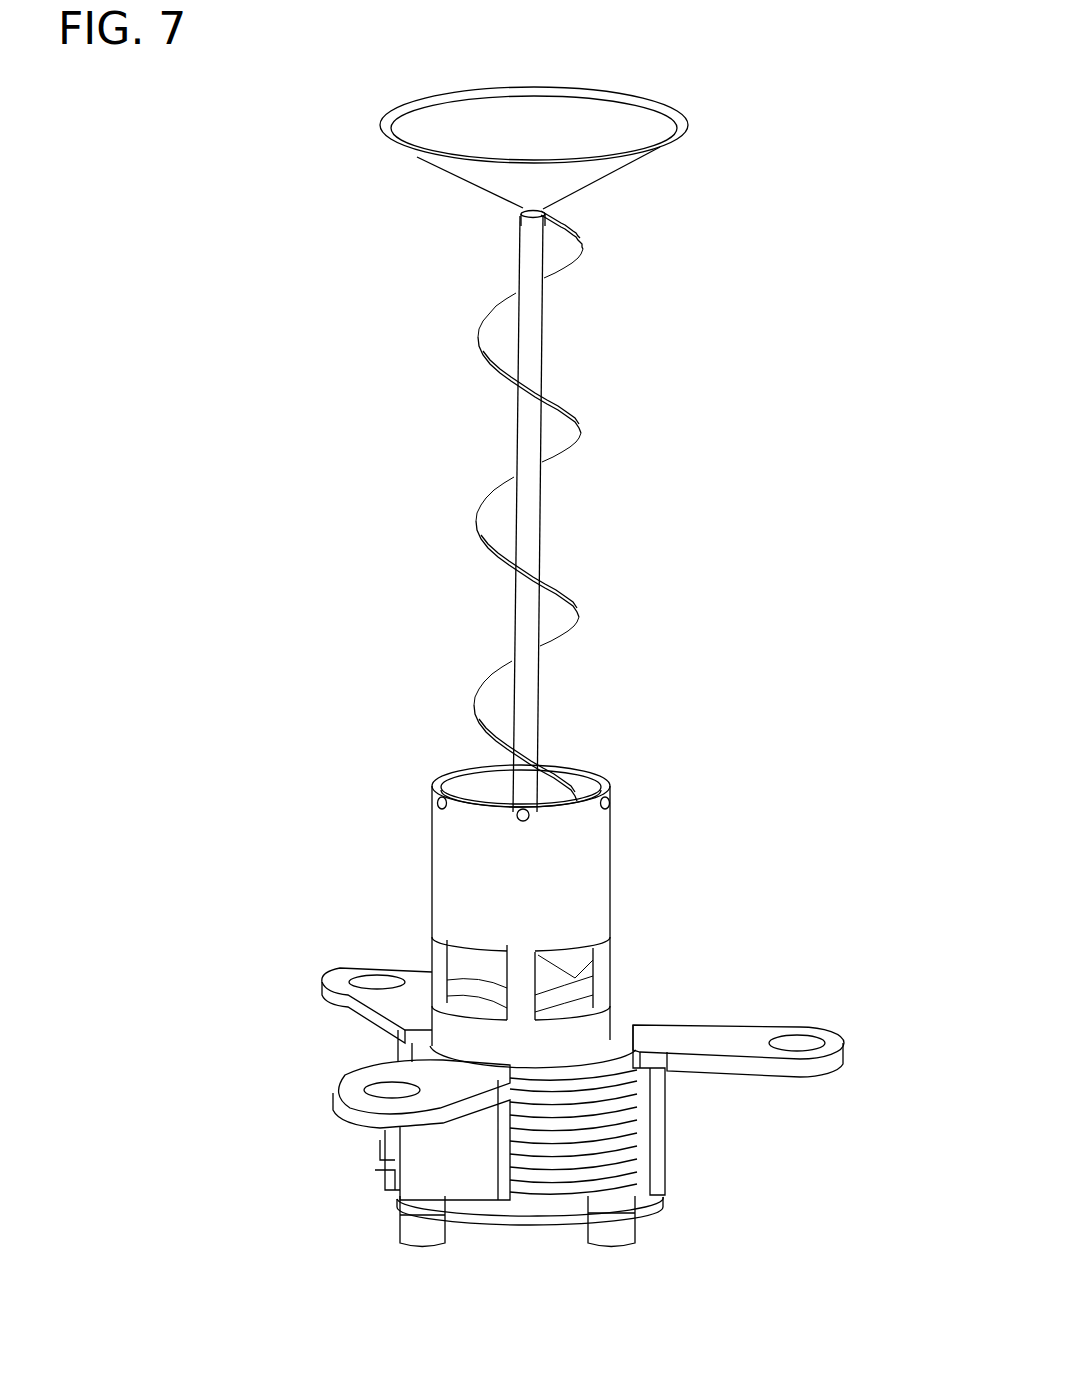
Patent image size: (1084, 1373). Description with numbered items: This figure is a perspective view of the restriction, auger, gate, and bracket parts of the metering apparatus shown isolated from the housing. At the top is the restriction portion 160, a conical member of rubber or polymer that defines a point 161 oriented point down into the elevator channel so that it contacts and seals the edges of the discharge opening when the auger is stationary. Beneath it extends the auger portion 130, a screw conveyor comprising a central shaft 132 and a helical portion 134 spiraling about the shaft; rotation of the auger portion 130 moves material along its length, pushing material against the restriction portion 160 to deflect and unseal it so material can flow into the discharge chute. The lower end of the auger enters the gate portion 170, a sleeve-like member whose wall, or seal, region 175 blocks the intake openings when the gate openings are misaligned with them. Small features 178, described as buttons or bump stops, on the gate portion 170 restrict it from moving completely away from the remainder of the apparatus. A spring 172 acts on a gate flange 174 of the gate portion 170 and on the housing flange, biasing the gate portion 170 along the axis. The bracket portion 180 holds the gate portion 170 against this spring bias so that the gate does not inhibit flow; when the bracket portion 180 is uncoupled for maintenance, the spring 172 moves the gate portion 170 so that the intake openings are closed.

The auger portion 130 is at (377, 511).
The central shaft 132 is at (525, 447).
The helical portion 134 is at (488, 518).
The restriction portion 160 is at (455, 160).
The point 161 is at (520, 208).
The gate portion 170 is at (523, 894).
The spring 172 is at (600, 1150).
The gate flange 174 is at (540, 1177).
The wall region 175 is at (543, 947).
The features 178 is at (517, 808).
The bracket portion 180 is at (743, 1059).